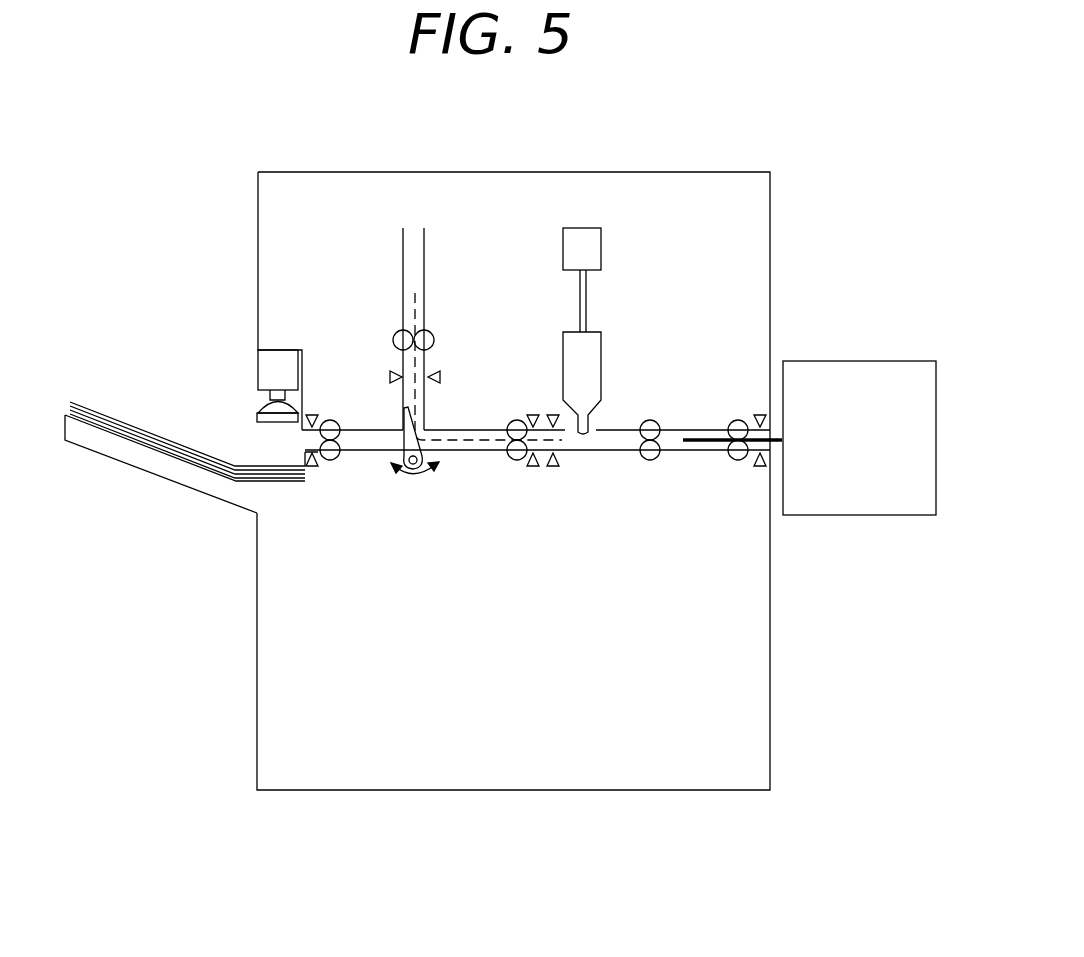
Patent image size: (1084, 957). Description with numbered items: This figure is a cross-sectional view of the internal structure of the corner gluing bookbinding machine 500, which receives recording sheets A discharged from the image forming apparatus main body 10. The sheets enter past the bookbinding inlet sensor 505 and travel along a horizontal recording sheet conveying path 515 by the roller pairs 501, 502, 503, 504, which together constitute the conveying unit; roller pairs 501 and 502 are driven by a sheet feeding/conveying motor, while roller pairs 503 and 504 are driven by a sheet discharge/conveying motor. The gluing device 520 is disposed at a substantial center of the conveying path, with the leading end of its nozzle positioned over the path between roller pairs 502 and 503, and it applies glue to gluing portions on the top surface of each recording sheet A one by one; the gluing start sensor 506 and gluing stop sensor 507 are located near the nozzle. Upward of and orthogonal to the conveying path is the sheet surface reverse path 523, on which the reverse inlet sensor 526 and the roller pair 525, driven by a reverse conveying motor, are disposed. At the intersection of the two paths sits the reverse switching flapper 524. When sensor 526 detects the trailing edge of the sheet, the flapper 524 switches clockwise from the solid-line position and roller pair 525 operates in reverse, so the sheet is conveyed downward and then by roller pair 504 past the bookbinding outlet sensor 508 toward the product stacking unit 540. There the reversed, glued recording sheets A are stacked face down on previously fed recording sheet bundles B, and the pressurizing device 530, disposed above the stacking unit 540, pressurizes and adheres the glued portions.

The corner gluing bookbinding machine 500 is at (605, 172).
The image forming apparatus main body 10 is at (883, 361).
The pressurizing device 530 is at (257, 365).
The roller pair 504 is at (334, 419).
The bookbinding outlet sensor 508 is at (312, 467).
The product stacking unit 540 is at (150, 481).
The sheet surface reverse path 523 is at (433, 256).
The roller pair 525 is at (393, 333).
The reverse inlet sensor 526 is at (443, 377).
The gluing device 520 is at (552, 303).
The roller pair 503 is at (517, 419).
The roller pair 502 is at (650, 419).
The roller pair 501 is at (735, 419).
The bookbinding inlet sensor 505 is at (760, 468).
The gluing start sensor 506 is at (556, 468).
The gluing stop sensor 507 is at (532, 468).
The conveyance path 515 is at (458, 453).
The reverse switching flapper 524 is at (412, 472).
The recording sheet A is at (455, 438).
The recording sheet bundle B is at (105, 405).